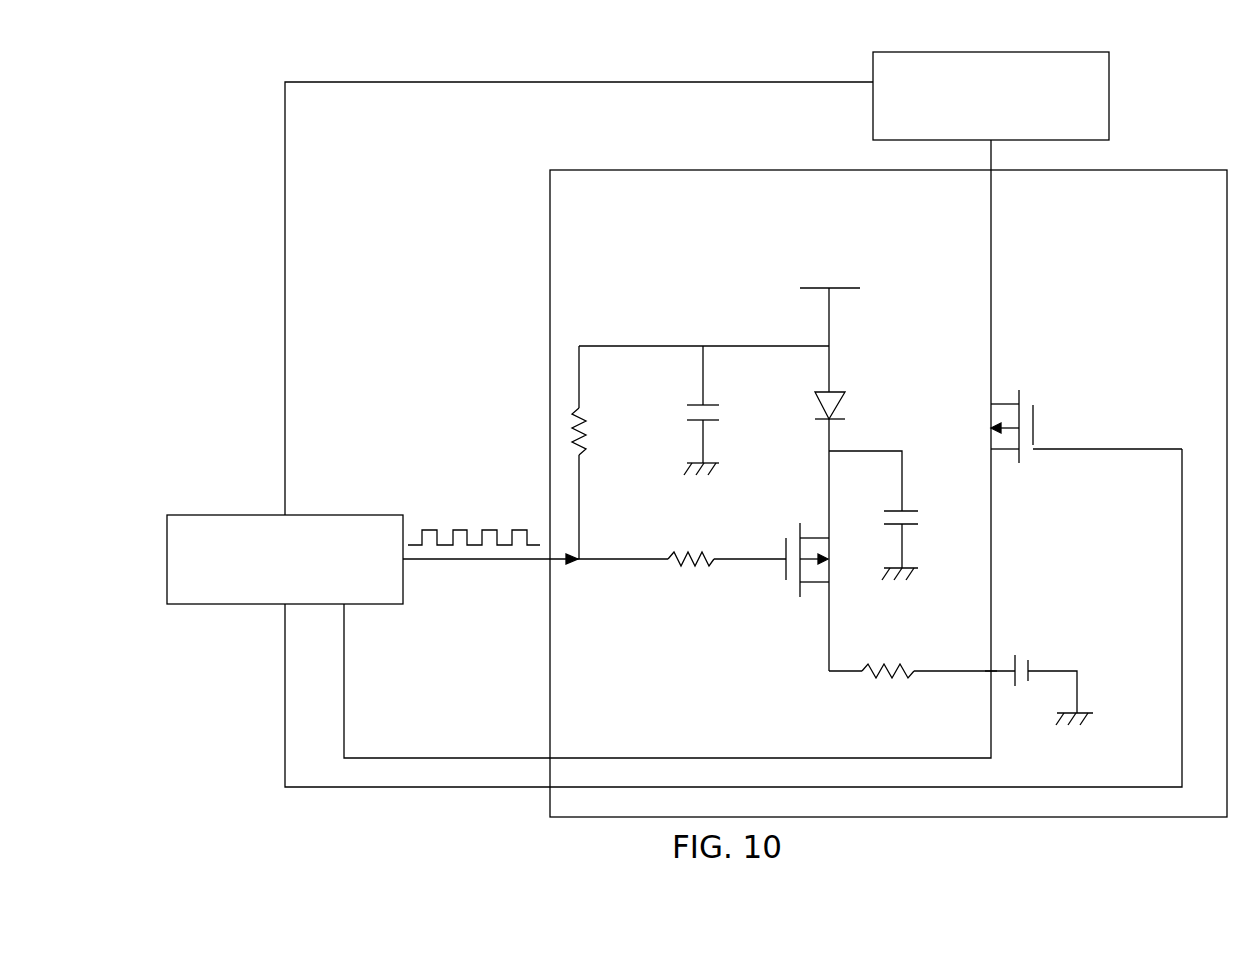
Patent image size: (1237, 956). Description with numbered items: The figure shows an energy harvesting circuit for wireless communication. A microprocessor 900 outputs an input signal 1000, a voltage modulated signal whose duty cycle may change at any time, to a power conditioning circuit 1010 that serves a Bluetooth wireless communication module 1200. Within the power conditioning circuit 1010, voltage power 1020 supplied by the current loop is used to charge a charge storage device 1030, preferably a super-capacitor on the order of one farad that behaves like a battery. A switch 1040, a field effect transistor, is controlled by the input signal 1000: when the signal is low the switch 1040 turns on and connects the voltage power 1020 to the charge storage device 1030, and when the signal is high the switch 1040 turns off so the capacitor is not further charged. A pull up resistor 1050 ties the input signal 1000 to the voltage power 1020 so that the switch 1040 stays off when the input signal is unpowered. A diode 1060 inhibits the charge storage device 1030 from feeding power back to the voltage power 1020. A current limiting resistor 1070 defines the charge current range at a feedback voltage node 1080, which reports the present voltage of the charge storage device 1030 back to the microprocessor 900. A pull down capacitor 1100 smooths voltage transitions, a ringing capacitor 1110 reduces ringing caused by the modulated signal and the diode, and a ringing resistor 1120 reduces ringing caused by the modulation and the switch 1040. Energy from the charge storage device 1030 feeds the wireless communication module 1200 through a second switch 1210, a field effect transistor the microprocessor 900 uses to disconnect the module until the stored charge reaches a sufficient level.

The microprocessor 900 is at (190, 515).
The input signal 1000 is at (437, 530).
The power conditioning circuit 1010 is at (772, 170).
The voltage power 1020 is at (842, 288).
The charge storage device 1030 is at (1020, 662).
The switch 1040 is at (815, 533).
The pull up resistor 1050 is at (585, 420).
The diode 1060 is at (837, 392).
The current limiting resistor 1070 is at (872, 670).
The feedback voltage node 1080 is at (990, 672).
The pull down capacitor 1100 is at (712, 405).
The ringing capacitor 1110 is at (908, 511).
The ringing resistor 1120 is at (690, 558).
The wireless communication module 1200 is at (993, 52).
The switch 1210 is at (1024, 412).